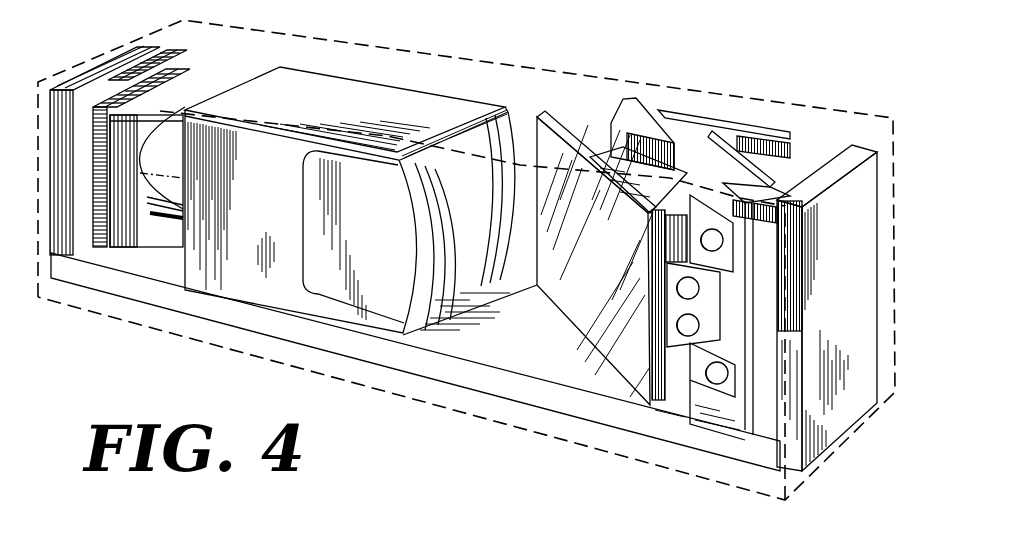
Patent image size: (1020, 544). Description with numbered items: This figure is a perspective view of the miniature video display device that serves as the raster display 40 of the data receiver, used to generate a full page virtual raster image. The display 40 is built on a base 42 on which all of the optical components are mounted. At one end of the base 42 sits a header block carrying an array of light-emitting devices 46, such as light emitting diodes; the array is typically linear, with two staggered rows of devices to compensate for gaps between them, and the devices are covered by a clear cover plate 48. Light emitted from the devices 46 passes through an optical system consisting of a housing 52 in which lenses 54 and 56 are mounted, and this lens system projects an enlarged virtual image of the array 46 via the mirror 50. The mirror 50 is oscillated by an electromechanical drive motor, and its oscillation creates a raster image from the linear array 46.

The raster display 40 is at (572, 48).
The base 42 is at (221, 309).
The array of light-emitting devices 46 is at (128, 74).
The clear cover plate 48 is at (197, 100).
The mirror 50 is at (586, 304).
The housing 52 is at (320, 92).
The lens 54 is at (160, 212).
The lens 56 is at (500, 148).